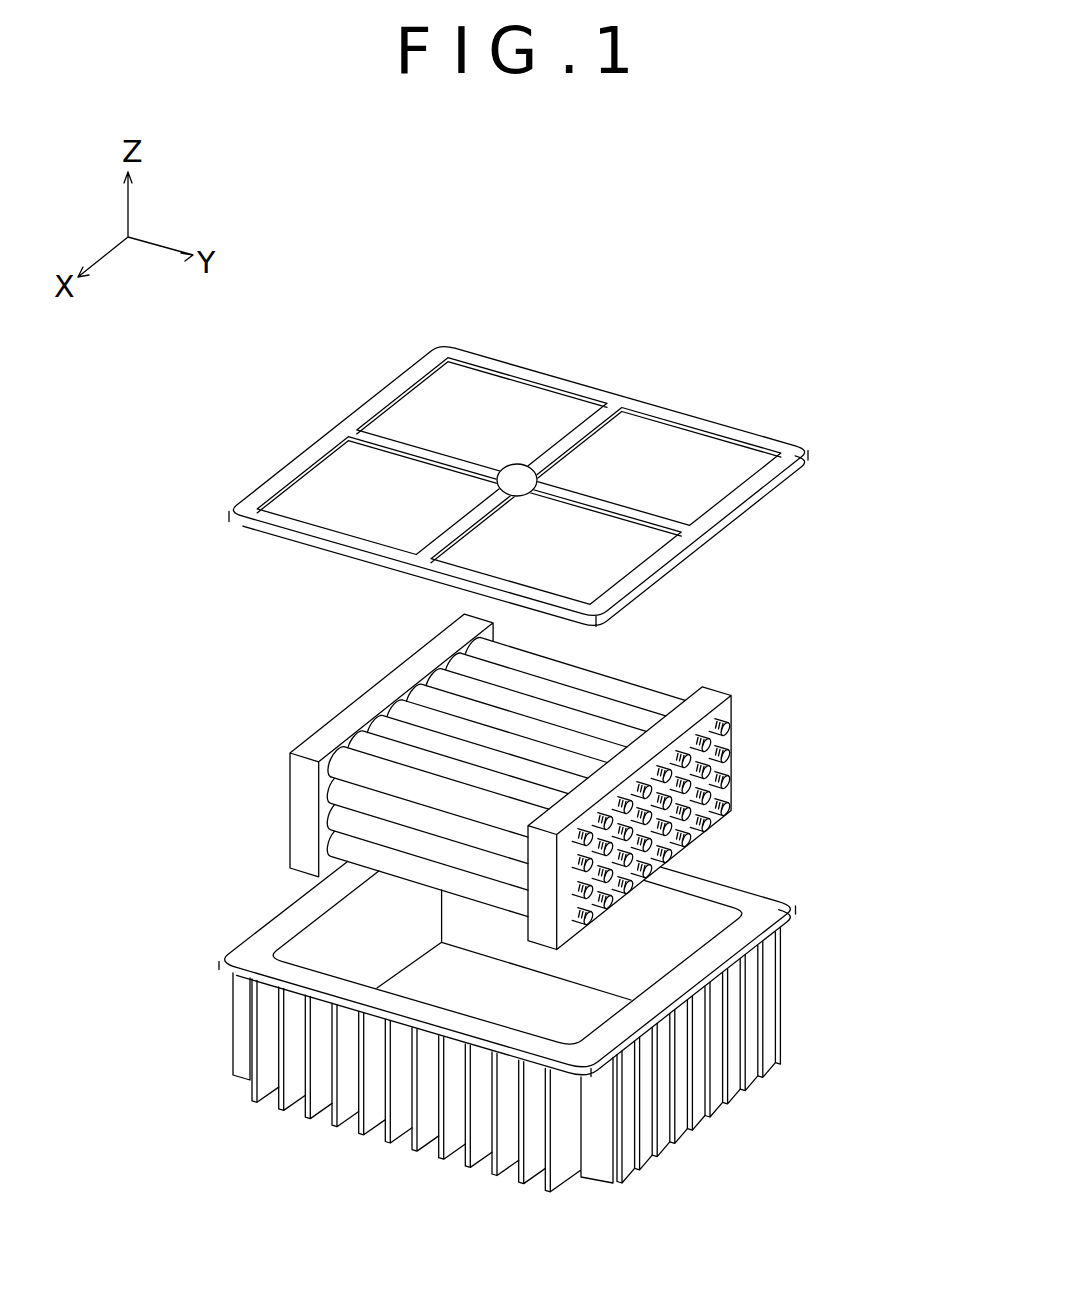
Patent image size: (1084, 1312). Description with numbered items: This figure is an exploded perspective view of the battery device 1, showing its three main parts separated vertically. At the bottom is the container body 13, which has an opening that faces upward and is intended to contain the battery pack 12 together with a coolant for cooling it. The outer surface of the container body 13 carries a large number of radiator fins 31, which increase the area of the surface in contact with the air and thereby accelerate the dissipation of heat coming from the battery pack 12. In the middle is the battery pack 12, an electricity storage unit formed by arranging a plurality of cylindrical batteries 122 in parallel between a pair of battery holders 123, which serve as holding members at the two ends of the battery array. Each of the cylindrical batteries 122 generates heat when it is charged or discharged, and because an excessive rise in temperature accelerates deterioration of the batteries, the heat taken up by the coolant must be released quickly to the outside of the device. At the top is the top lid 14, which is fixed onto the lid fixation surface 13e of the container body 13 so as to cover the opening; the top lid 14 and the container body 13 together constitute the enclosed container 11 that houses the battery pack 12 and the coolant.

The battery device 1 is at (745, 357).
The enclosed container 11 is at (586, 707).
The battery pack 12 is at (782, 742).
The container body 13 is at (680, 912).
The lid fixation surface 13e is at (795, 899).
The top lid 14 is at (745, 440).
The radiator fins 31 is at (770, 998).
The cylindrical batteries 122 is at (598, 683).
The battery holders 123 is at (706, 694).